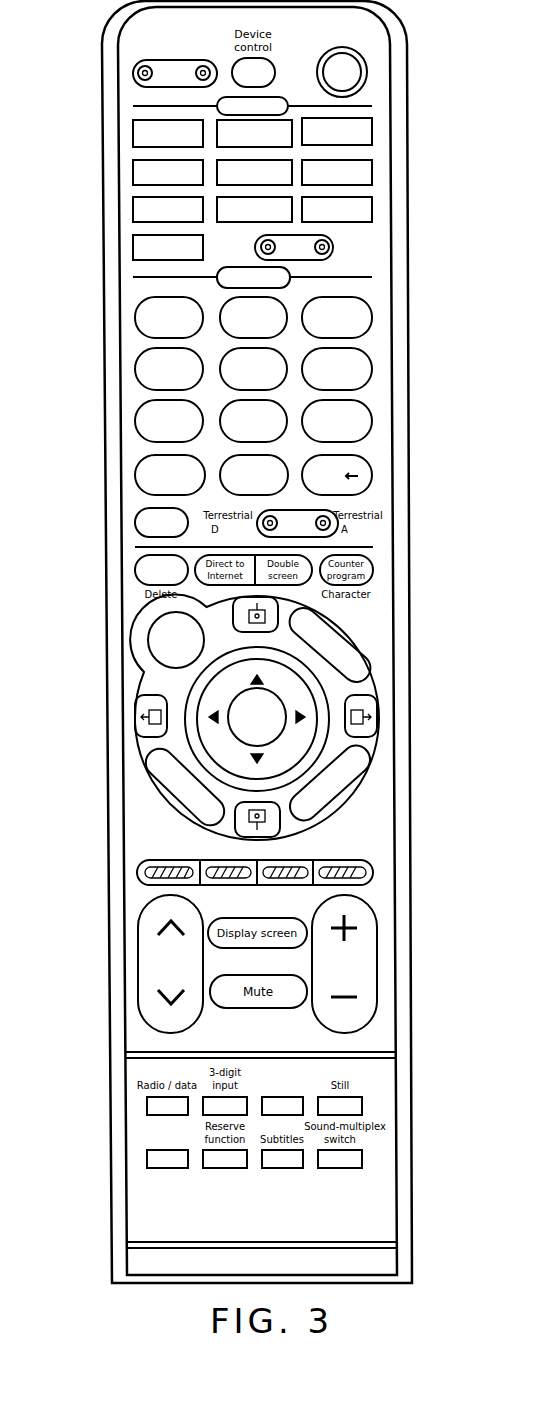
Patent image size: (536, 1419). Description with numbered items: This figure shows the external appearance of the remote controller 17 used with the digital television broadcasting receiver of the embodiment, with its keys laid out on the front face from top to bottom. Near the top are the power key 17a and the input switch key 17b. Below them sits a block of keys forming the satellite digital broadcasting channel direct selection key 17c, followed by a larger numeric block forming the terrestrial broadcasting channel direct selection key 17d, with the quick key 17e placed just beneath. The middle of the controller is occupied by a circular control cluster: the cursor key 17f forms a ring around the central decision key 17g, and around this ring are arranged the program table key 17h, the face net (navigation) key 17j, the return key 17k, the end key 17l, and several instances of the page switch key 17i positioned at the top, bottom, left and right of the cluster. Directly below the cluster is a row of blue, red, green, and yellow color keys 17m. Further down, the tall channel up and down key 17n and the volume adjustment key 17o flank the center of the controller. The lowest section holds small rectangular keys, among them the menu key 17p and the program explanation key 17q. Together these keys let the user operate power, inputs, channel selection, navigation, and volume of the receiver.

The remote controller 17 is at (410, 525).
The power key 17a is at (357, 67).
The input switch key 17b is at (135, 73).
The satellite digital broadcasting channel direct selection key 17c is at (376, 179).
The terrestrial broadcasting channel direct selection key 17d is at (376, 379).
The quick key 17e is at (135, 523).
The cursor key 17f is at (295, 737).
The decision key 17g is at (274, 698).
The program table key 17h is at (340, 662).
The page switch key 17i is at (272, 604).
The face net (navigation) key 17j is at (160, 637).
The return key 17k is at (160, 773).
The end key 17l is at (330, 778).
The color keys 17m is at (374, 873).
The channel up and down key 17n is at (140, 958).
The volume adjustment key 17o is at (377, 960).
The menu key 17p is at (147, 1160).
The program explanation key 17q is at (303, 1100).